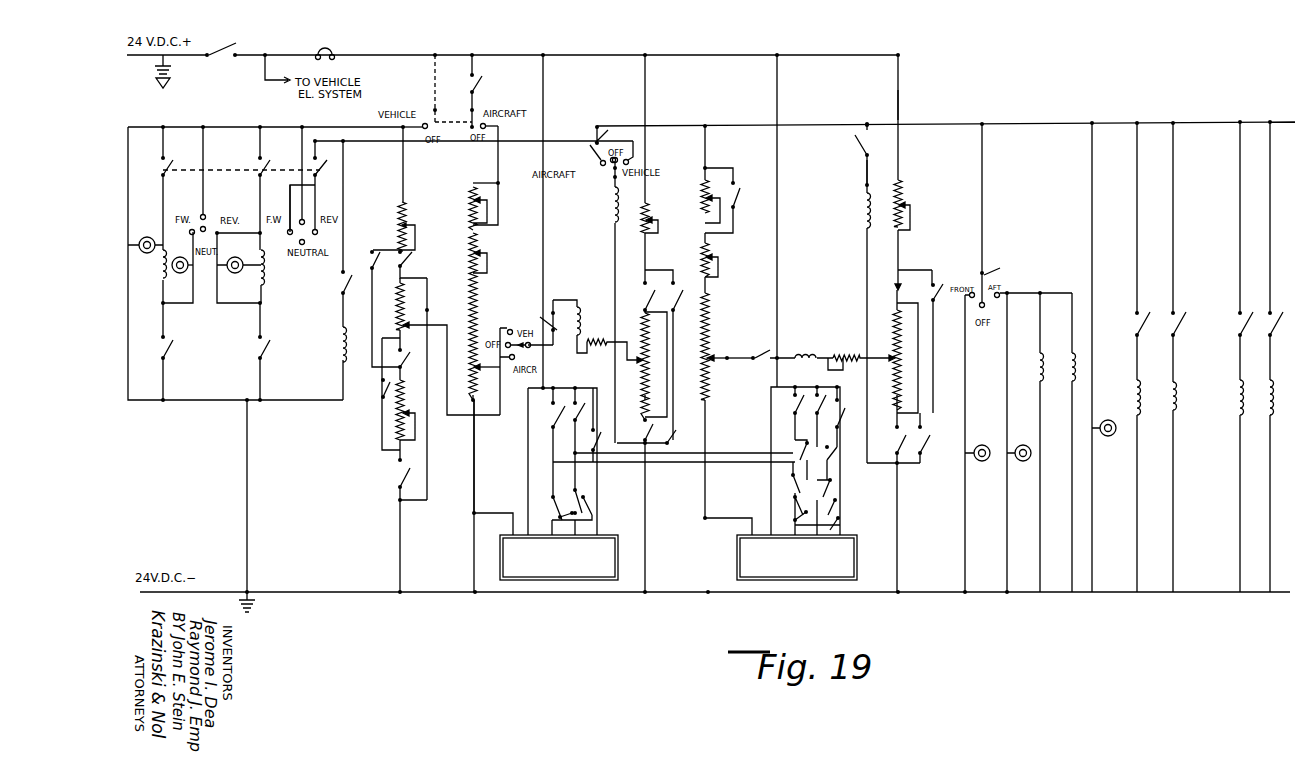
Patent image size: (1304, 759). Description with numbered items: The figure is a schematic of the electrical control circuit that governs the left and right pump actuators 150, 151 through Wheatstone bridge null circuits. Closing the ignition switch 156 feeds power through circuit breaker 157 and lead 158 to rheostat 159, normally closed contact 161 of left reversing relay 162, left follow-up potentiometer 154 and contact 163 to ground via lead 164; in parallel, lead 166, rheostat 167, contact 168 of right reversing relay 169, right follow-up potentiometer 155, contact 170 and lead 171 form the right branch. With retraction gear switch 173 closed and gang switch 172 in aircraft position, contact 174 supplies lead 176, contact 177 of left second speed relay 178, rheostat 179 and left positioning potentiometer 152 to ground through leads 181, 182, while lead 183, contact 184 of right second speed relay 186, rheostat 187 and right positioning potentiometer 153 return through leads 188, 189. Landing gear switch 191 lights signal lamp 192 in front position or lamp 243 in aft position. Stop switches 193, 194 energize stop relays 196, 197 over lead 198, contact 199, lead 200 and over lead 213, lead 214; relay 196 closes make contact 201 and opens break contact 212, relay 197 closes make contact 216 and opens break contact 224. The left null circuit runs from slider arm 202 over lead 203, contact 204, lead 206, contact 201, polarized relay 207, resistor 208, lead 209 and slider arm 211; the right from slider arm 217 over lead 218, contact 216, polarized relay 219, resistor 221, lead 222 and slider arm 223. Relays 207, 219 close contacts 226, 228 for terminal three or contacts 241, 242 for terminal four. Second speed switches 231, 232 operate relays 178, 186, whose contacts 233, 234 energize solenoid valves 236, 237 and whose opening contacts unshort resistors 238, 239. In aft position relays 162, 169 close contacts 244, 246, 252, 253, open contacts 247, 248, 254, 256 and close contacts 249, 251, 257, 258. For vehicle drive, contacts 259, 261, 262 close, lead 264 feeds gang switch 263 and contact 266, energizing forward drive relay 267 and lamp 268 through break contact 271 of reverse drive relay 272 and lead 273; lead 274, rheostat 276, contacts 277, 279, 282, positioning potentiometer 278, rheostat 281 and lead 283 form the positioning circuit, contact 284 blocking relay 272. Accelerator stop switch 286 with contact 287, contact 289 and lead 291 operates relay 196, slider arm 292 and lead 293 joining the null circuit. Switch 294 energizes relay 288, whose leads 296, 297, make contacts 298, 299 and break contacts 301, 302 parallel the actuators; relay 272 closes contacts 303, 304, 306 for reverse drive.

The left pump actuator 150 is at (618, 548).
The right pump actuator 151 is at (858, 548).
The left positioning potentiometer 152 is at (476, 320).
The right positioning potentiometer 153 is at (710, 383).
The left follow-up potentiometer 154 is at (643, 390).
The right follow-up potentiometer 155 is at (895, 336).
The ignition switch 156 is at (232, 46).
The circuit breaker 157 is at (333, 55).
The lead 158 is at (646, 93).
The rheostat 159 is at (648, 218).
The normally closed contact 161 is at (645, 300).
The left pump actuator reversing relay 162 is at (1037, 375).
The normally closed contact 163 is at (644, 433).
The lead 164 is at (645, 537).
The lead 166 is at (899, 96).
The rheostat 167 is at (903, 185).
The normally closed contact 168 is at (897, 303).
The right pump actuator reversing relay 169 is at (1069, 360).
The normally closed contact 170 is at (897, 444).
The lead 171 is at (898, 533).
The gang switch 172 is at (455, 128).
The retraction gear switch 173 is at (476, 82).
The contact 174 is at (466, 130).
The lead 176 is at (498, 171).
The normally closed contact 177 is at (498, 197).
The left wheel second speed relay 178 is at (1134, 407).
The rheostat 179 is at (471, 262).
The lead 181 is at (474, 468).
The lead 182 is at (506, 513).
The lead 183 is at (705, 160).
The normally closed contact 184 is at (737, 193).
The right wheel second speed relay 186 is at (1170, 413).
The rheostat 187 is at (712, 246).
The lead 188 is at (708, 500).
The lead 189 is at (725, 518).
The aircraft landing gear switch 191 is at (995, 280).
The signal lamp 192 is at (982, 463).
The stop switch 193 is at (588, 155).
The stop switch 194 is at (866, 160).
The left stop relay 196 is at (610, 214).
The right stop relay 197 is at (863, 210).
The lead 198 is at (599, 130).
The contact 199 is at (605, 168).
The lead 200 is at (613, 270).
The make contact 201 is at (540, 322).
The potentiometer slider arm 202 is at (500, 368).
The lead 203 is at (502, 378).
The contact 204 is at (528, 348).
The lead 206 is at (575, 350).
The polarized relay 207 is at (580, 318).
The resistor 208 is at (615, 340).
The lead 209 is at (645, 318).
The potentiometer slider arm 211 is at (642, 368).
The break contact 212 is at (596, 440).
The lead 213 is at (870, 130).
The lead 214 is at (866, 262).
The make contact 216 is at (766, 351).
The potentiometer slider arm 217 is at (738, 347).
The lead 218 is at (738, 360).
The polarized relay 219 is at (816, 355).
The resistor 221 is at (864, 346).
The lead 222 is at (858, 355).
The potentiometer slider arm 223 is at (895, 372).
The break contact 224 is at (840, 406).
The make contact 226 is at (552, 418).
The contact 228 is at (792, 400).
The left aircraft wheel second speed switch 231 is at (1135, 328).
The right aircraft wheel second speed switch 232 is at (1180, 310).
The make contact 233 is at (1247, 308).
The make contact 234 is at (1277, 306).
The left wheel second speed solenoid valve 236 is at (1243, 386).
The right wheel second speed solenoid valve 237 is at (1272, 410).
The left wheel second speed resistor 238 is at (471, 215).
The right wheel second speed resistor 239 is at (703, 212).
The contact 241 is at (578, 408).
The contact 242 is at (820, 400).
The lamp 243 is at (1023, 463).
The make contact 244 is at (681, 300).
The make contact 246 is at (677, 430).
The break contact 247 is at (546, 497).
The break contact 248 is at (583, 493).
The make contact 249 is at (558, 517).
The make contact 251 is at (592, 500).
The make contact 252 is at (940, 290).
The make contact 253 is at (926, 448).
The break contact 254 is at (794, 495).
The break contact 256 is at (836, 502).
The make contact 257 is at (794, 522).
The make contact 258 is at (839, 519).
The switch contact 259 is at (422, 131).
The contact 261 is at (640, 157).
The switch contact 262 is at (500, 329).
The gang switch 263 is at (192, 212).
The lead 264 is at (226, 108).
The contact 266 is at (162, 245).
The forward drive relay 267 is at (162, 272).
The lamp 268 is at (185, 278).
The break contact 271 is at (166, 350).
The vehicle reverse drive relay 272 is at (263, 278).
The lead 273 is at (248, 490).
The lead 274 is at (404, 196).
The adjusting rheostat 276 is at (401, 213).
The make contact 277 is at (410, 258).
The positioning potentiometer 278 is at (397, 320).
The make contact 279 is at (403, 355).
The adjusting rheostat 281 is at (404, 412).
The make contact 282 is at (403, 478).
The lead 283 is at (400, 552).
The break contact 284 is at (264, 350).
The accelerator pedal stop switch 286 is at (168, 170).
The contact 287 is at (325, 170).
The relay 288 is at (342, 340).
The contact 289 is at (290, 235).
The lead 291 is at (376, 143).
The slider arm 292 is at (430, 310).
The lead 293 is at (471, 368).
The switch 294 is at (348, 280).
The lead 296 is at (748, 460).
The lead 297 is at (668, 462).
The make contact 298 is at (831, 483).
The make contact 299 is at (790, 476).
The break contact 301 is at (830, 450).
The break contact 302 is at (805, 446).
The contact 303 is at (372, 262).
The contact 304 is at (428, 304).
The contact 306 is at (382, 385).